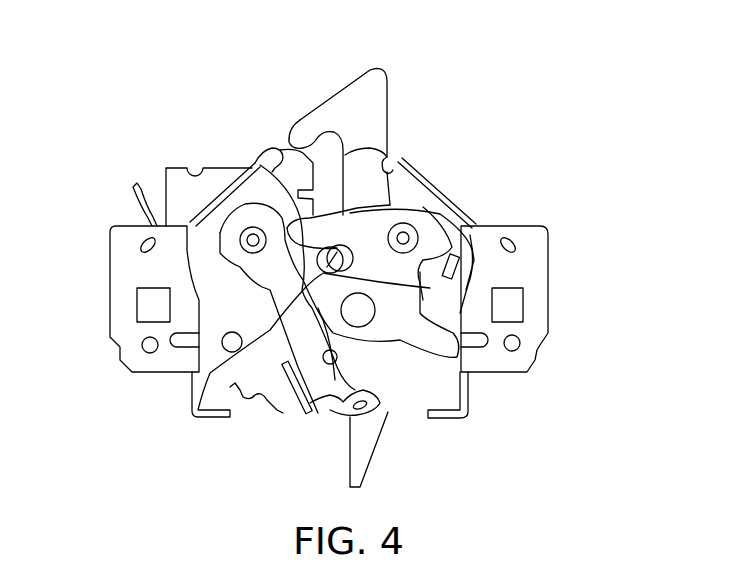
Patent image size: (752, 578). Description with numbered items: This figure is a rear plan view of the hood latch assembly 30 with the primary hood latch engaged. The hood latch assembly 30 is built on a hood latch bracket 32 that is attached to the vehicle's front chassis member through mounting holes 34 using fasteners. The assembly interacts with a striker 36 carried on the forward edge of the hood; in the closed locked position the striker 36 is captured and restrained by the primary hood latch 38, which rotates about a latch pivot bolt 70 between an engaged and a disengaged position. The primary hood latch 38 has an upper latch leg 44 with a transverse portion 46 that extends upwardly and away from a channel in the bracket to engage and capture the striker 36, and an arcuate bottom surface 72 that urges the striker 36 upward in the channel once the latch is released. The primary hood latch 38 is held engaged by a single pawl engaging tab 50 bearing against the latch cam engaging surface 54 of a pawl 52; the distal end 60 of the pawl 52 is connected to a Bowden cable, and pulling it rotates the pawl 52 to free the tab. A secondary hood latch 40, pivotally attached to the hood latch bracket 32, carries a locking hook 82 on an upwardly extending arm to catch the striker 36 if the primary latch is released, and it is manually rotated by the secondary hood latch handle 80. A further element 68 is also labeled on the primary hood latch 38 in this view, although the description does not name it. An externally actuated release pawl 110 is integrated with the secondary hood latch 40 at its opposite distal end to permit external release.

The hood latch assembly 30 is at (532, 87).
The hood latch bracket 32 is at (542, 253).
The mounting holes 34 is at (143, 313).
The striker 36 is at (373, 223).
The primary hood latch 38 is at (430, 247).
The secondary hood latch 40 is at (377, 98).
The upper latch leg 44 is at (345, 232).
The transverse portion 46 is at (258, 163).
The pawl engaging tab 50 is at (287, 390).
The pawl 52 is at (252, 265).
The latch cam engaging surface 54 is at (195, 413).
The distal end 60 is at (347, 415).
The stop 68 is at (422, 280).
The latch pivot bolt 70 is at (463, 217).
The arcuate bottom surface 72 is at (465, 287).
The secondary hood latch handle 80 is at (130, 198).
The locking hook 82 is at (303, 137).
The externally actuated release pawl 110 is at (370, 438).